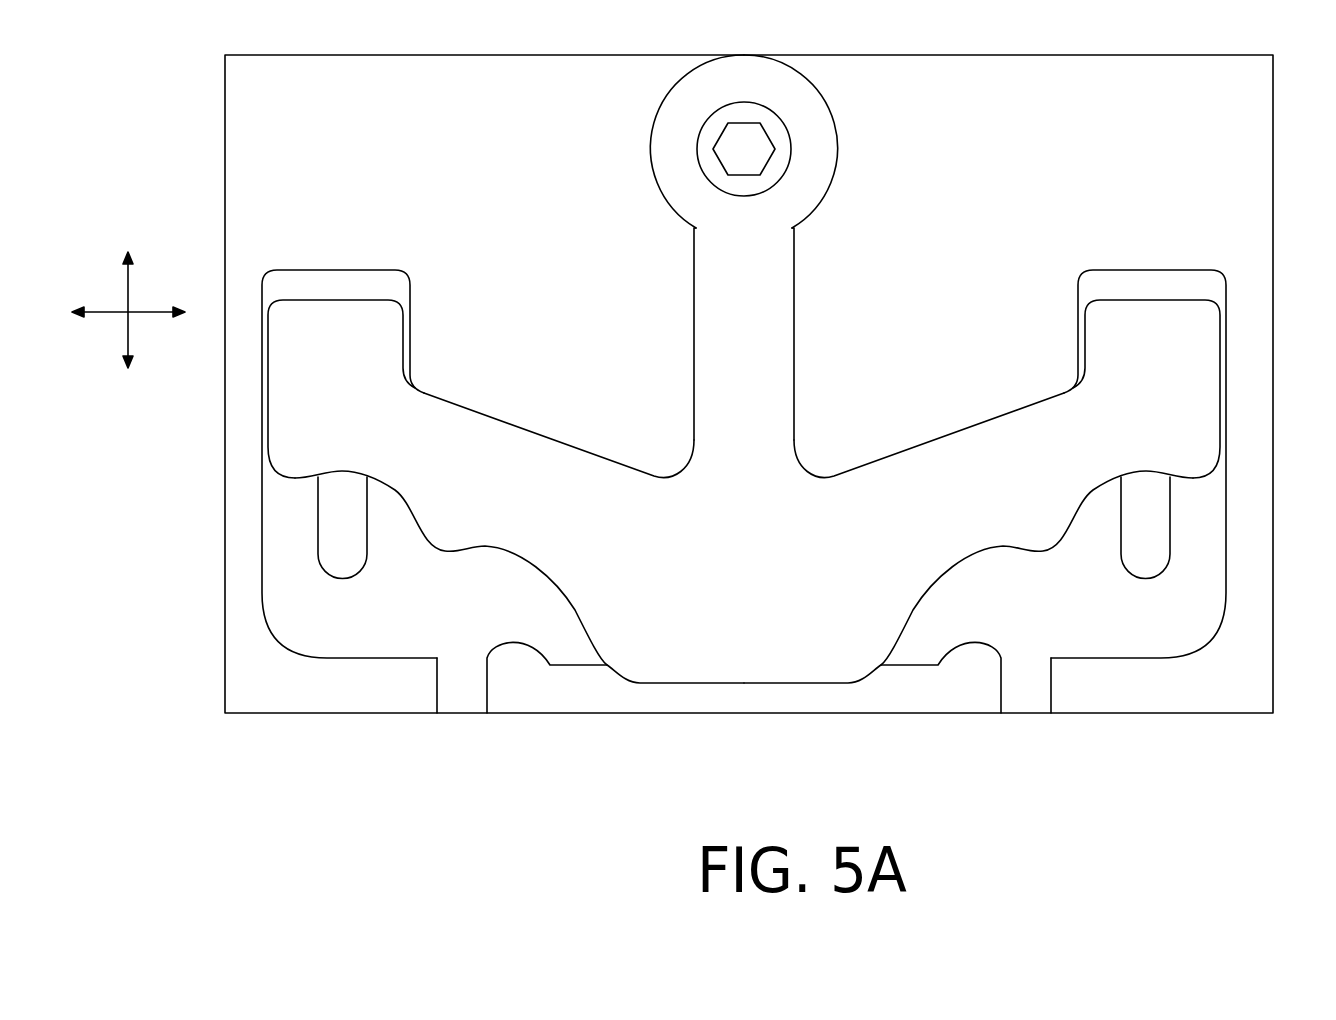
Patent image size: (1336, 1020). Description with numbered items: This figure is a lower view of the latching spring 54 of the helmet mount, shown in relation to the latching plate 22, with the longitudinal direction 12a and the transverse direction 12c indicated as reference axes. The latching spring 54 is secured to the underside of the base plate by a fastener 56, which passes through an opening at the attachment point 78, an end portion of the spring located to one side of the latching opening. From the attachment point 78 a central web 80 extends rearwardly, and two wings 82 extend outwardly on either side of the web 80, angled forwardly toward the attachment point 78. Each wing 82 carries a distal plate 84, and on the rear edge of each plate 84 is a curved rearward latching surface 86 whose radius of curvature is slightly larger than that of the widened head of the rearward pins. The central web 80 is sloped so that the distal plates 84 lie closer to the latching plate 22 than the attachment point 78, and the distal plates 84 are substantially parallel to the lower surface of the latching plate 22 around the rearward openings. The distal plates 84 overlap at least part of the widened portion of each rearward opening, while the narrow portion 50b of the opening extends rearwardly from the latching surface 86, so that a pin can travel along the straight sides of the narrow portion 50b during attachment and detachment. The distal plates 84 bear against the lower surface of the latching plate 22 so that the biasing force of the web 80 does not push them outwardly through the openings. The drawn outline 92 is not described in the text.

The latching plate 22 is at (1027, 152).
The latching spring 54 is at (892, 299).
The fastener 56 is at (752, 140).
The attachment point 78 is at (708, 153).
The central web 80 is at (730, 323).
The wings 82 is at (512, 445).
The distal plate 84 is at (324, 382).
The rearward latching surface 86 is at (399, 490).
The base portion 92 is at (688, 665).
The narrow portion 50b is at (318, 538).
The longitudinal direction 12a is at (128, 282).
The transverse direction 12c is at (102, 312).